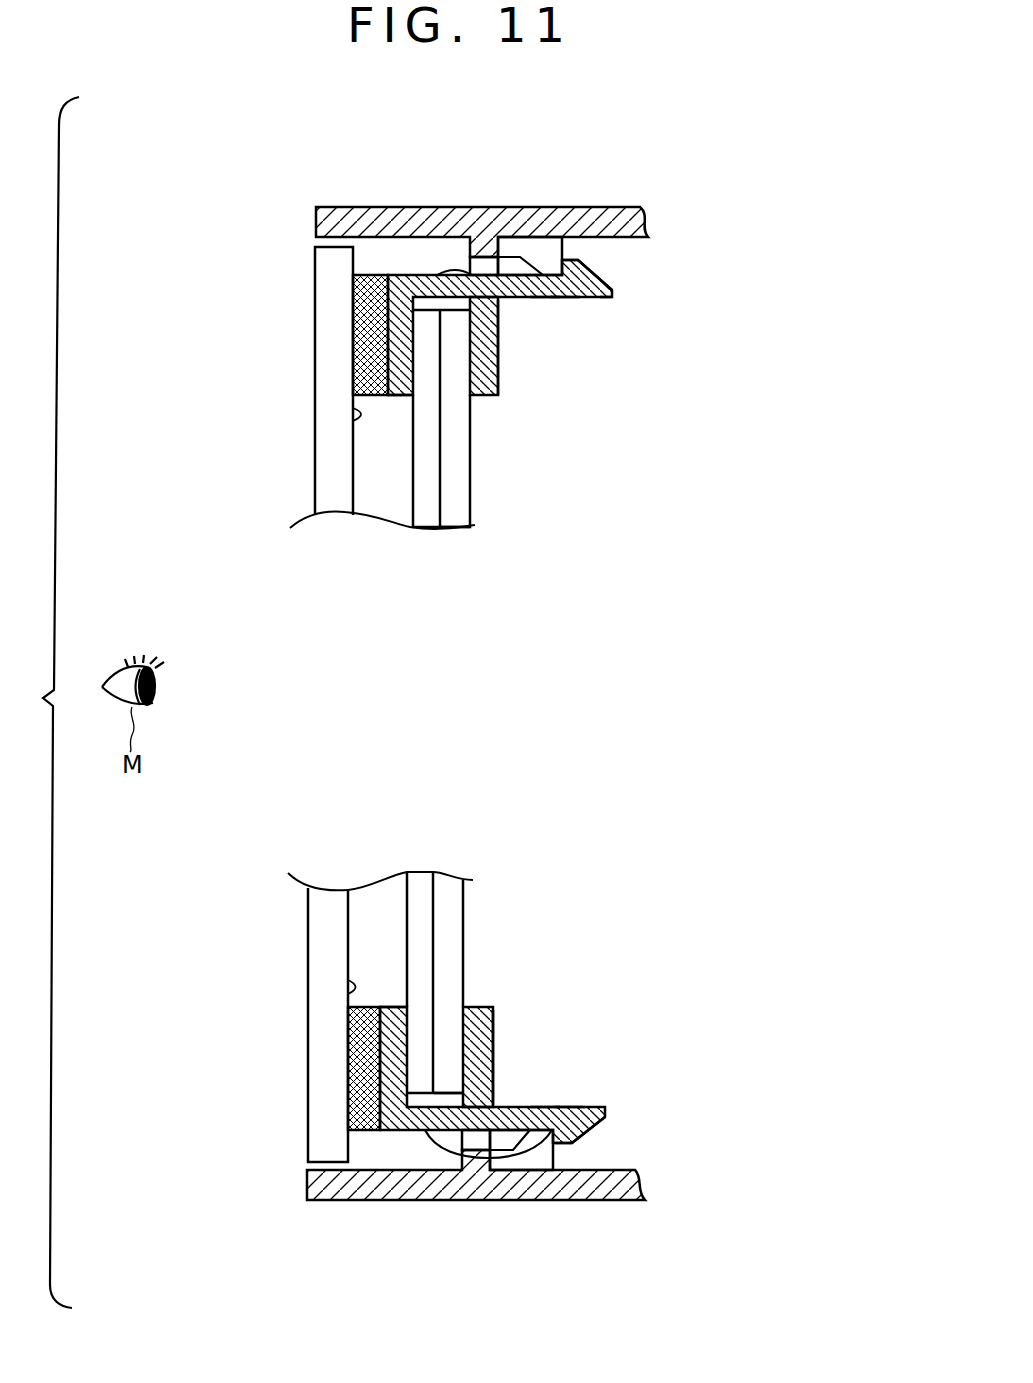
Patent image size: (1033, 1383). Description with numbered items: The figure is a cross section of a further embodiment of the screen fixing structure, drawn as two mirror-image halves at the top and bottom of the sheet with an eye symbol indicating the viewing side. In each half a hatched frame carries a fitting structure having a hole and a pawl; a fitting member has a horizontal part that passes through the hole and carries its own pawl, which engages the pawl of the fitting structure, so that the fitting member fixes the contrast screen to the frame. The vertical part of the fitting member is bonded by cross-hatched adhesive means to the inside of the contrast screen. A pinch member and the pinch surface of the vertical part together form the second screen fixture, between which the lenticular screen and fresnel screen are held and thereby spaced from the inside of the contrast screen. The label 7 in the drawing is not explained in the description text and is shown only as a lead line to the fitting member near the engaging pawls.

The corner portion of support plate 7 is at (614, 296).